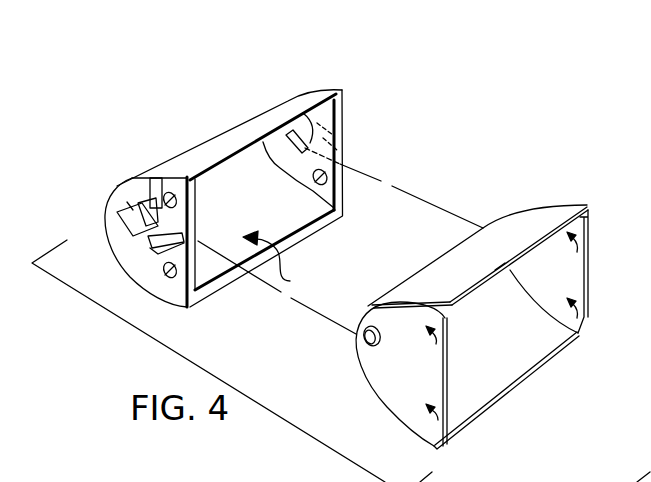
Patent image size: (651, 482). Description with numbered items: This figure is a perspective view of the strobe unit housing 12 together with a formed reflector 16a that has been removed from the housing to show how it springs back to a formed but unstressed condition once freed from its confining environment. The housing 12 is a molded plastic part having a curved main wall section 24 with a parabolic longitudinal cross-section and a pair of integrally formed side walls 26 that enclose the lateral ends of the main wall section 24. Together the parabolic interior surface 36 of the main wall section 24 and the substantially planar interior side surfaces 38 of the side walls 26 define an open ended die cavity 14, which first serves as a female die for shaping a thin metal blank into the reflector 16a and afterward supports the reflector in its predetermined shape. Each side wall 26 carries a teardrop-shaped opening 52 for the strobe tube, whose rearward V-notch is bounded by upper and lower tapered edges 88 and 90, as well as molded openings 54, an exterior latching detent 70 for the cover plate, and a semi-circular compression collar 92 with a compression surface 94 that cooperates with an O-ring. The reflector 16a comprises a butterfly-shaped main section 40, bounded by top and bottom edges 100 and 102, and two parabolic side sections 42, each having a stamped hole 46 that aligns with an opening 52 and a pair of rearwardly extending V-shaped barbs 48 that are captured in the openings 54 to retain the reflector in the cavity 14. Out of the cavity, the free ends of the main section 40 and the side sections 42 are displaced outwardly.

The housing 12 is at (338, 80).
The die cavity 14 is at (276, 262).
The reflector 16a is at (603, 206).
The main wall section 24 is at (252, 123).
The side walls 26 is at (344, 135).
The parabolic interior surface 36 is at (291, 226).
The interior side surfaces 38 is at (197, 219).
The main section 40 is at (534, 215).
The side sections 42 is at (589, 279).
The stamped hole 46 is at (365, 342).
The V-shaped tabs or barbs 48 is at (588, 257).
The openings 52 is at (296, 127).
The openings 54 is at (167, 192).
The latching protrusion or detent 70 is at (158, 252).
The upper tapered edge 88 is at (127, 202).
The lower tapered edge 90 is at (137, 214).
The compression collars 92 is at (150, 182).
The semi-circular compression surface 94 is at (135, 236).
The top edge 100 is at (497, 270).
The bottom edge 102 is at (538, 371).